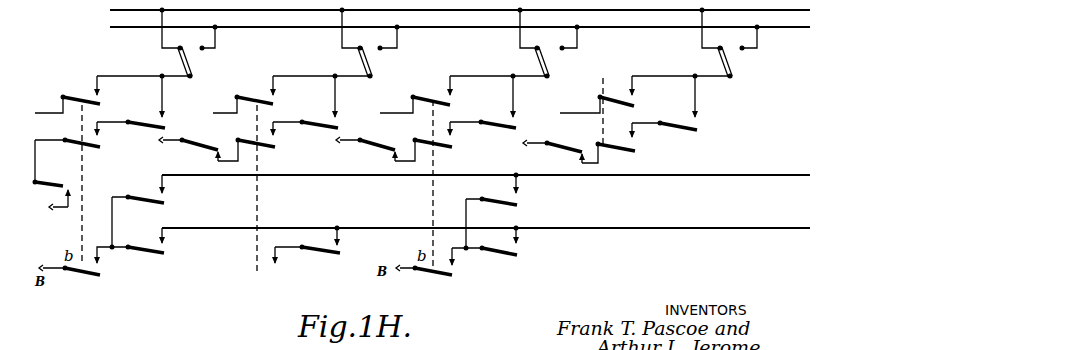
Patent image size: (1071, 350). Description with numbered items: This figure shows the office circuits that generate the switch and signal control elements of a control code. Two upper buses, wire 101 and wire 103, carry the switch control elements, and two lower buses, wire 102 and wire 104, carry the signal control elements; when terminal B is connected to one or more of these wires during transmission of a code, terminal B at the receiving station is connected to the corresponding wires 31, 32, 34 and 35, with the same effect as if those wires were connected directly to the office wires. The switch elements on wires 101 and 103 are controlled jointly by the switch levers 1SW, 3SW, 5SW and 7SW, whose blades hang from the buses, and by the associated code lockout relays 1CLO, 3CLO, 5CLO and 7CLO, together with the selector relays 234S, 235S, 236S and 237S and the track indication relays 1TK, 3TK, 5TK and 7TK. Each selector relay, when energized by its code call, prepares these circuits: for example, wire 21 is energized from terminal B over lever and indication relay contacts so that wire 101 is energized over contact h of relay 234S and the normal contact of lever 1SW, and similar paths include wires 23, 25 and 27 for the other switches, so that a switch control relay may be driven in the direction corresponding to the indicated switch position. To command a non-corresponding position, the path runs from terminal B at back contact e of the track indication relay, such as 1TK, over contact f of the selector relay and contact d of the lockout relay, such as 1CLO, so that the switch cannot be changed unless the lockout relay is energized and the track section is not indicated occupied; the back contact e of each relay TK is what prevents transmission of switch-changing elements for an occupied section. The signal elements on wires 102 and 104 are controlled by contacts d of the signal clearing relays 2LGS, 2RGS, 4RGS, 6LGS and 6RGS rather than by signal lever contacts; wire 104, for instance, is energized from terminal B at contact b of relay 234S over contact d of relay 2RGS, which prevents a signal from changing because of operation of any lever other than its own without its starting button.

The wire 101 is at (460, 6).
The wire 31 is at (460, 6).
The wire 103 is at (460, 20).
The wire 32 is at (460, 20).
The wire 102 is at (486, 164).
The wire 34 is at (486, 164).
The wire 104 is at (486, 217).
The wire 35 is at (486, 217).
The switch lever 1SW is at (188, 44).
The switch lever 3SW is at (369, 44).
The switch lever 5SW is at (548, 44).
The switch lever 7SW is at (729, 44).
The selector relay 234S is at (116, 85).
The selector relay 235S is at (298, 85).
The selector relay 236S is at (472, 88).
The selector relay 237S is at (652, 88).
The wire 21 is at (66, 95).
The wire 23 is at (237, 95).
The wire 25 is at (415, 96).
The wire 27 is at (597, 96).
The code lockout relay 1CLO is at (129, 114).
The code lockout relay 3CLO is at (304, 114).
The code lockout relay 5CLO is at (481, 114).
The code lockout relay 7CLO is at (663, 115).
The track indication relay 1TK is at (66, 166).
The track indication relay 3TK is at (208, 140).
The track indication relay 5TK is at (386, 140).
The track indication relay 7TK is at (571, 140).
The signal clearing relay 2LGS is at (134, 200).
The signal clearing relay 2RGS is at (130, 235).
The signal clearing relay 4RGS is at (306, 235).
The signal clearing relay 6LGS is at (492, 211).
The signal clearing relay 6RGS is at (485, 241).